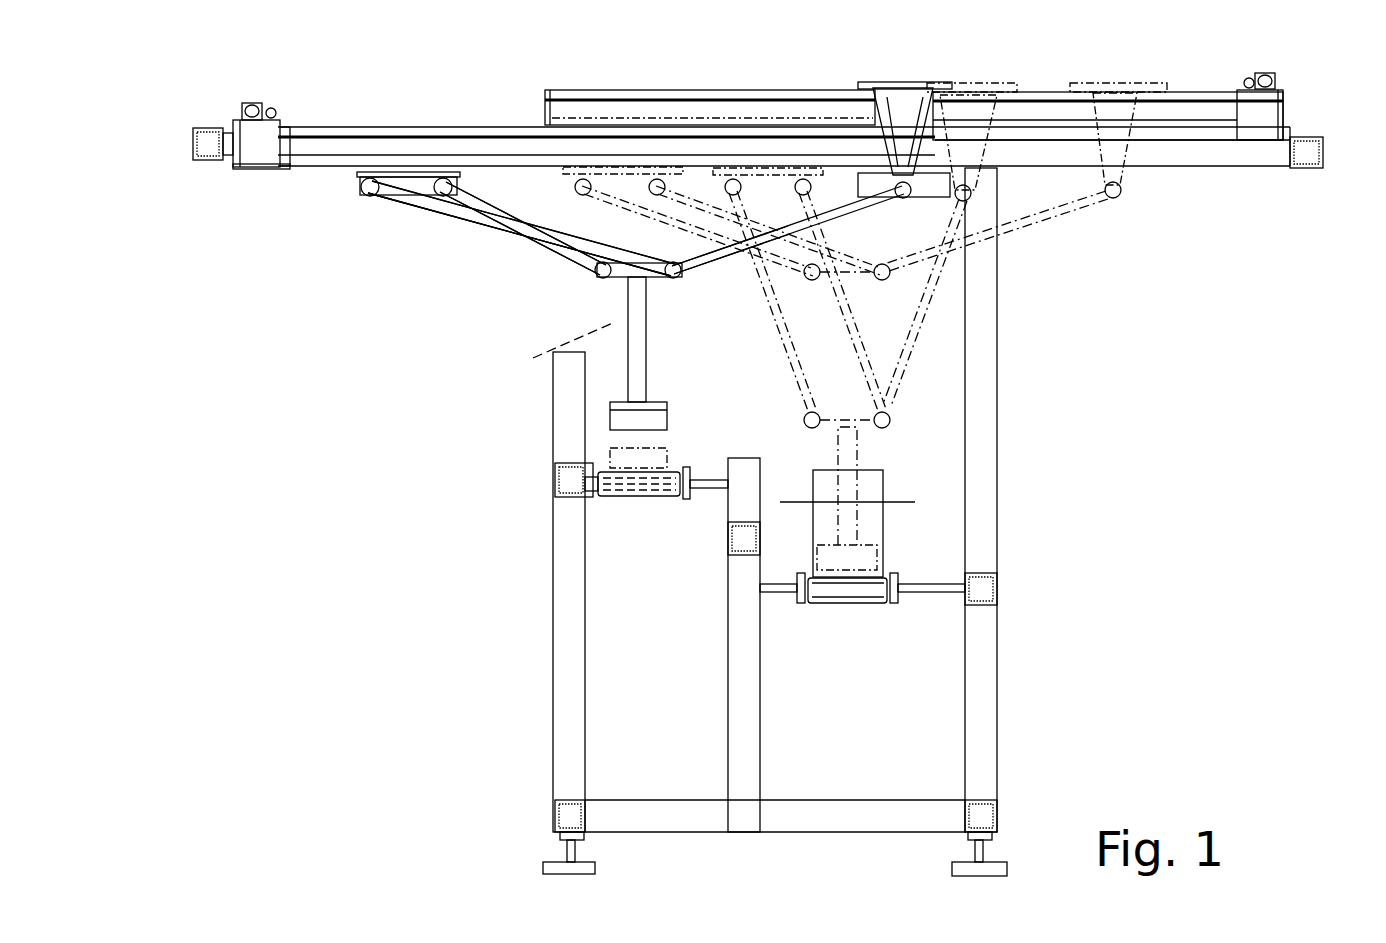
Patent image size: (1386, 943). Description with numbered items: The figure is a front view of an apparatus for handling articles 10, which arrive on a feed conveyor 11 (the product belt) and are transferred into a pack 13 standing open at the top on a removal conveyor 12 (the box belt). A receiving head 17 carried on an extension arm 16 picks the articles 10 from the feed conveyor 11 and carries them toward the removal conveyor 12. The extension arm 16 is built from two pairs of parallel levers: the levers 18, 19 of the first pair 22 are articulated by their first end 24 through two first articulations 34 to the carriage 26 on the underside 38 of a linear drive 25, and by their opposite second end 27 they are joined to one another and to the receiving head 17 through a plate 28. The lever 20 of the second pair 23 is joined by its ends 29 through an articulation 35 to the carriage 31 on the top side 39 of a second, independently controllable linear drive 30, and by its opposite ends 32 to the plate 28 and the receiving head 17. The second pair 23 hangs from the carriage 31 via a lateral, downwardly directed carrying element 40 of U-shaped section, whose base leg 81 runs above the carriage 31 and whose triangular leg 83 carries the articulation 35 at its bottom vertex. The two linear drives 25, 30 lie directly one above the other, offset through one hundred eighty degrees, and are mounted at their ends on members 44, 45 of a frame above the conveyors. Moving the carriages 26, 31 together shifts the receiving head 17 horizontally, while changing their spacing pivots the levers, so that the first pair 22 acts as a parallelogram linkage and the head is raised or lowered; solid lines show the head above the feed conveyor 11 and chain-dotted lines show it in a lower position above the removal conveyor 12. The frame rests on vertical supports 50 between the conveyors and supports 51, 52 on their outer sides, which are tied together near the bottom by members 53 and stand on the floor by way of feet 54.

The articles 10 is at (620, 418).
The feed conveyor 11 is at (647, 503).
The removal conveyor 12 is at (864, 612).
The pack 13 is at (892, 522).
The extension arm 16 is at (410, 253).
The receiving head 17 is at (617, 370).
The lever 18 is at (487, 227).
The lever 19 is at (487, 200).
The lever 20 is at (702, 275).
The first pair of levers 22 is at (422, 215).
The second pair of levers 23 is at (897, 203).
The first end 24 is at (466, 178).
The linear drive 25 is at (197, 116).
The carriage 26 is at (346, 168).
The second end 27 is at (650, 250).
The plate 28 is at (625, 280).
The ends 29 is at (855, 218).
The second linear drive 30 is at (1298, 102).
The carriage 31 is at (855, 85).
The ends 32 is at (690, 250).
The first articulations 34 is at (403, 172).
The articulation 35 is at (920, 140).
The underside 38 is at (292, 168).
The top side 39 is at (630, 88).
The carrying element 40 is at (933, 96).
The member 44 is at (1325, 152).
The member 45 is at (192, 142).
The supports 50 is at (730, 710).
The support 51 is at (563, 653).
The support 52 is at (987, 740).
The members 53 is at (867, 810).
The feet 54 is at (587, 870).
The base leg 81 is at (930, 97).
The leg 83 is at (980, 142).